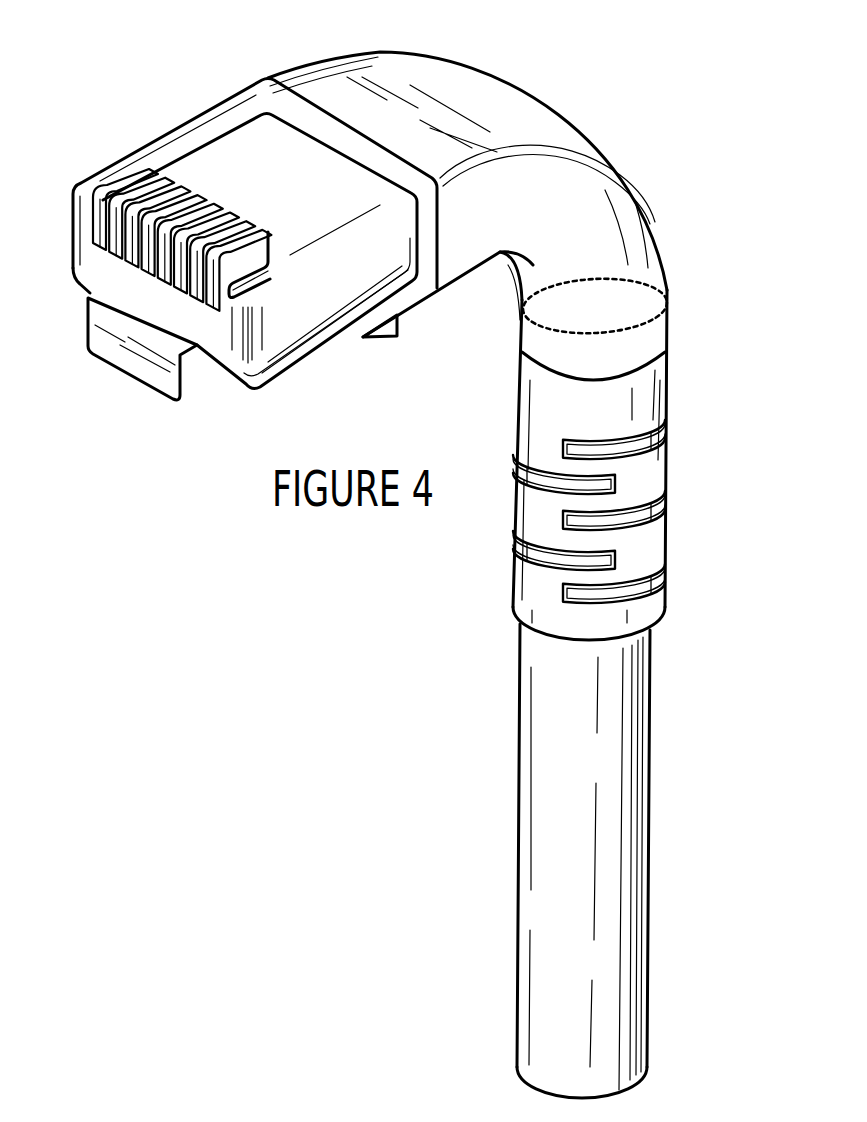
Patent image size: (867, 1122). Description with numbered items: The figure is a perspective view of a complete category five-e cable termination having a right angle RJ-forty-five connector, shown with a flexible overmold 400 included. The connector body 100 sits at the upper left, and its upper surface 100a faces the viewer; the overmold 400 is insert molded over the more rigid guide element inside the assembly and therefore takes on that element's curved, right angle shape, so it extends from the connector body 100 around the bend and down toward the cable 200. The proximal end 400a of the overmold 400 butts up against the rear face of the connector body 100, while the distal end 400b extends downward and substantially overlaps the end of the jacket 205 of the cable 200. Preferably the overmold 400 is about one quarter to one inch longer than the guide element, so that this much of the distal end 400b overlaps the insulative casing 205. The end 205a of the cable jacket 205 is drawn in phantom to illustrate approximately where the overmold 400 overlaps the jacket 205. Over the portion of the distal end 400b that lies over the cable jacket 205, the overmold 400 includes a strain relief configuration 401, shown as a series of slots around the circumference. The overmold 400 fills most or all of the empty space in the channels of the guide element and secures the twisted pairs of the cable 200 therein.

The connector body 100 is at (167, 150).
The top surface of plug housing 100a is at (317, 106).
The flexible overmold 400 is at (652, 292).
The proximal end of the overmold 400a is at (437, 90).
The distal end of the overmold 400b is at (653, 598).
The strain relief configuration 401 is at (662, 511).
The cable jacket 205 is at (598, 722).
The end of the cable jacket 205a is at (653, 307).
The cable 200 is at (623, 828).